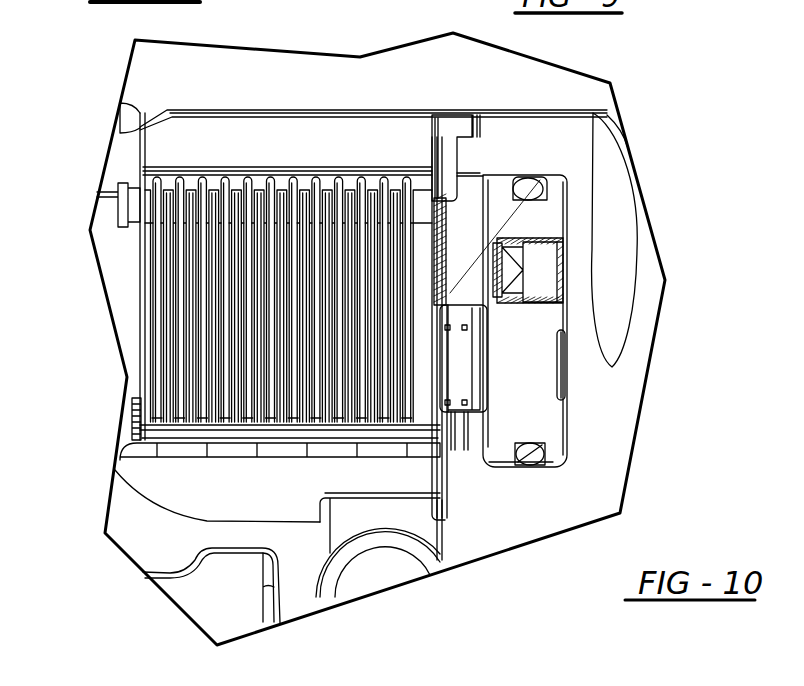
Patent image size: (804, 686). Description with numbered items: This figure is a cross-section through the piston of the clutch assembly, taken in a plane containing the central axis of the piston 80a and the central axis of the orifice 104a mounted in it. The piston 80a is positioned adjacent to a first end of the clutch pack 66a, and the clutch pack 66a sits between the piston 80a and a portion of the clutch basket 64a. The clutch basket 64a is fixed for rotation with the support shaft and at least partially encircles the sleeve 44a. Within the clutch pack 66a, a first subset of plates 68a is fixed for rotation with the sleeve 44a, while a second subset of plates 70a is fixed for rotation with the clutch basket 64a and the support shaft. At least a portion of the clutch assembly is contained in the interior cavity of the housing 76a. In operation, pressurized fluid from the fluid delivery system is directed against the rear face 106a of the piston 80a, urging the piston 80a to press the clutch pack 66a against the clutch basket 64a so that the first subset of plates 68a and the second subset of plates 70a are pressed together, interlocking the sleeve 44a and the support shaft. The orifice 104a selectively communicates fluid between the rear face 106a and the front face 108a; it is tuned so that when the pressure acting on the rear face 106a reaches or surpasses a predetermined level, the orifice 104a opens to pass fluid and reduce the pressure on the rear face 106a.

The sleeve 44a is at (297, 140).
The first subset of plates 68a is at (167, 300).
The second subset of plates 70a is at (167, 425).
The clutch pack 66a is at (177, 492).
The clutch basket 64a is at (288, 493).
The front face 108a is at (487, 444).
The orifice 104a is at (543, 265).
The rear face 106a is at (565, 340).
The piston 80a is at (520, 362).
The housing 76a is at (580, 413).